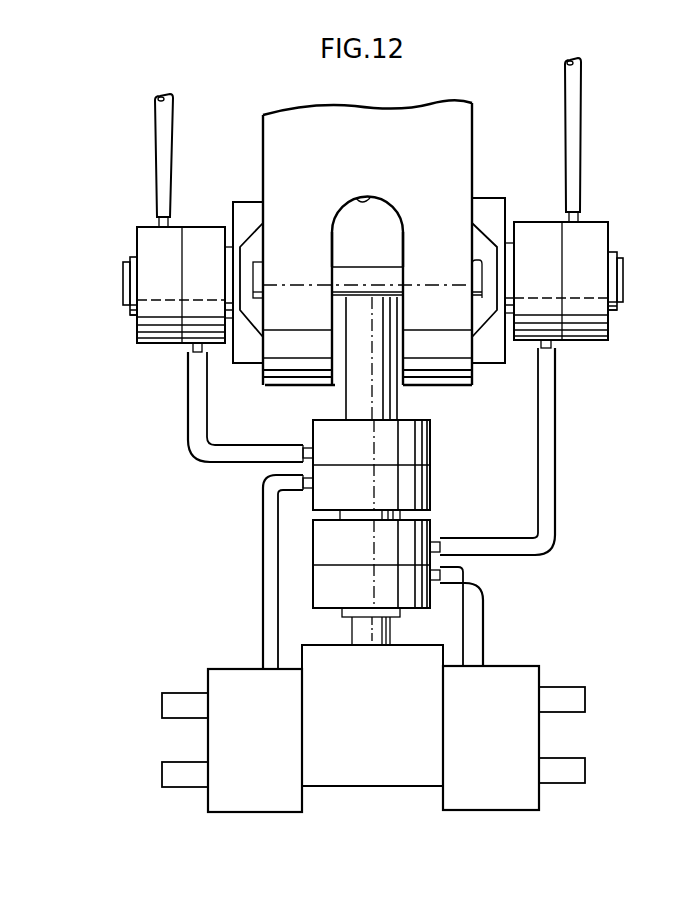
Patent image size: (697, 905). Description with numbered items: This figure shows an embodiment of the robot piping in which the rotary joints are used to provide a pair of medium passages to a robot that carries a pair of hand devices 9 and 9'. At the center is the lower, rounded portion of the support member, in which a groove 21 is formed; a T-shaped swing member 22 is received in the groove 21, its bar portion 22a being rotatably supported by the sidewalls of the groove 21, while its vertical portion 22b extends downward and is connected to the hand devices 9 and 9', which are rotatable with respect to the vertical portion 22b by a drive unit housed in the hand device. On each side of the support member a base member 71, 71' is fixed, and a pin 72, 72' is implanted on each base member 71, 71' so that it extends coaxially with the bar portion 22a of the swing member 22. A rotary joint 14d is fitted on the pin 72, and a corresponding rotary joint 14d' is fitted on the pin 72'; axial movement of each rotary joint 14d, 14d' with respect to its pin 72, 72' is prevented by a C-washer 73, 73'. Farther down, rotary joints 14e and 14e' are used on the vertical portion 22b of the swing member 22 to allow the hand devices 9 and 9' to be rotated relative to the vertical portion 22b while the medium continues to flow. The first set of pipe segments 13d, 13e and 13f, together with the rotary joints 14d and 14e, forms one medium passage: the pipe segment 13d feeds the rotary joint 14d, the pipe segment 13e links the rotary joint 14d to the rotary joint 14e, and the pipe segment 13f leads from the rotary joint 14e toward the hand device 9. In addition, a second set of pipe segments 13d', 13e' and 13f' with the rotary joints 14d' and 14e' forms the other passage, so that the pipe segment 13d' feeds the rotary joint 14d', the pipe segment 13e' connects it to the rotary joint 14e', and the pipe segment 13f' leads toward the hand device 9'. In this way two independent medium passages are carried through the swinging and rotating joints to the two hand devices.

The hand device 9 is at (232, 758).
The hand device 9' is at (514, 755).
The pipe segment 13d is at (136, 155).
The pipe segment 13d' is at (546, 135).
The pipe segment 13e is at (218, 407).
The pipe segment 13e' is at (525, 451).
The pipe segment 13f is at (251, 571).
The pipe segment 13f' is at (487, 616).
The rotary joint 14d is at (152, 284).
The rotary joint 14d' is at (583, 273).
The rotary joint 14e is at (394, 470).
The rotary joint 14e' is at (401, 560).
The groove 21 is at (362, 200).
The T-shaped swing member 22 is at (397, 302).
The bar portion 22a is at (477, 261).
The vertical portion 22b is at (397, 397).
The base member 71 is at (238, 270).
The base member 71' is at (501, 269).
The pin 72 is at (102, 286).
The pin 72' is at (636, 281).
The C-washer 73 is at (104, 327).
The C-washer 73' is at (636, 318).